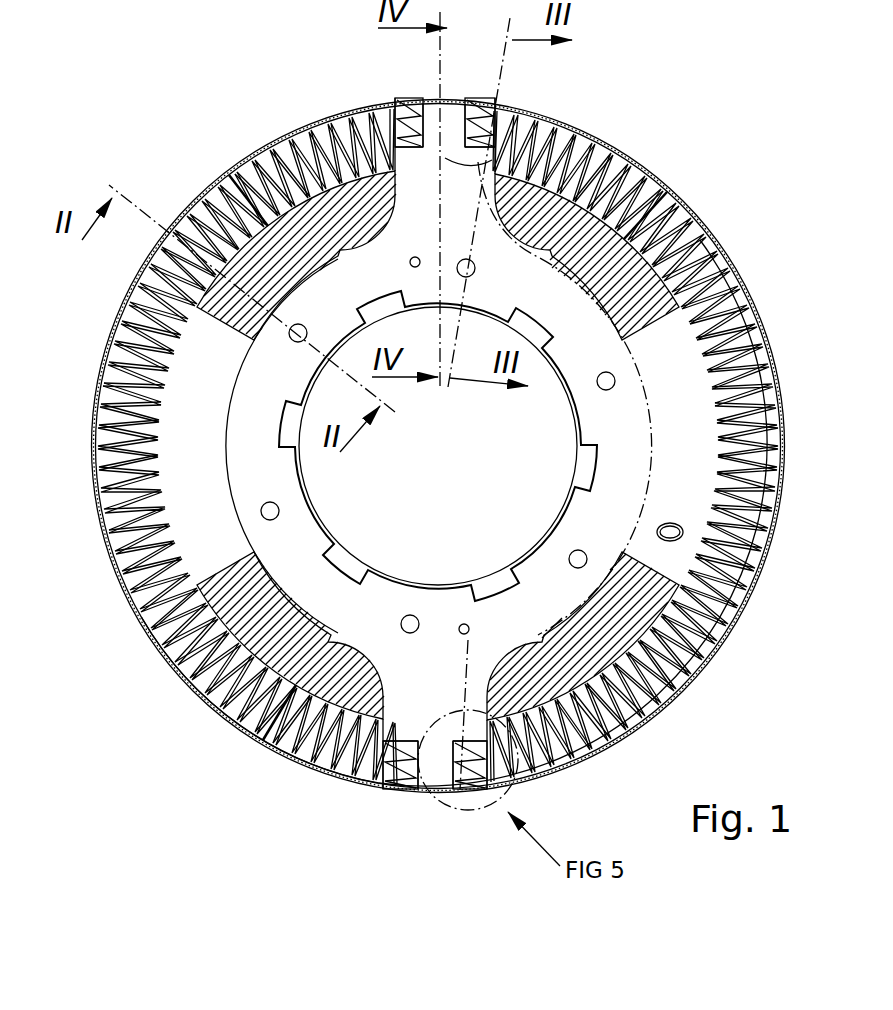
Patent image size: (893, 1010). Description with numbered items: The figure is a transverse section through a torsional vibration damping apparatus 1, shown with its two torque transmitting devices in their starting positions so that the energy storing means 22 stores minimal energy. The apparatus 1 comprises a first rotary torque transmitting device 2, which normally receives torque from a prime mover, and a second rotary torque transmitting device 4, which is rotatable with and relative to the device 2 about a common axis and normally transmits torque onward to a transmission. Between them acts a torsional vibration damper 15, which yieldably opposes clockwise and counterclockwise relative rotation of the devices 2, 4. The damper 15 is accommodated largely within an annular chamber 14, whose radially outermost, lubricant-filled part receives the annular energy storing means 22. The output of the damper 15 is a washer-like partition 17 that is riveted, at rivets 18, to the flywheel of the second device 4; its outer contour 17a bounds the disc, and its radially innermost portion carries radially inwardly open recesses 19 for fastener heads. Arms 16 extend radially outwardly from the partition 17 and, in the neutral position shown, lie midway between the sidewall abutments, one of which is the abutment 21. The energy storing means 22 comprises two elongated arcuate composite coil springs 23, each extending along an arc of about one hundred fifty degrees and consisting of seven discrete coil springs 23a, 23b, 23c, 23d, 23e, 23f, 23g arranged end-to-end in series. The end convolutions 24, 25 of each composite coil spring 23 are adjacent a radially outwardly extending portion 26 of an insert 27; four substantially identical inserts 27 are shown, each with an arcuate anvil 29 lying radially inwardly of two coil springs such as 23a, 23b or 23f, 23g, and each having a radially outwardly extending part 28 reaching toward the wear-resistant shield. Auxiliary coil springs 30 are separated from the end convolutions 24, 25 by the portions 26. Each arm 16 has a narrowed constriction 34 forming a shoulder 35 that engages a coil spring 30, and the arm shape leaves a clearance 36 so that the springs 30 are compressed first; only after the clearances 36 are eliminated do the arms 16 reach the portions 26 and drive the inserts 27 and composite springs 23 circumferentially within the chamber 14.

The apparatus 1 is at (676, 70).
The first rotary torque transmitting device 2 is at (745, 352).
The second rotary torque transmitting device 4 is at (250, 718).
The annular chamber 14 is at (700, 410).
The torsional vibration damper 15 is at (658, 158).
The arms 16 is at (503, 140).
The partition 17 is at (252, 483).
The flange outer contour 17a is at (262, 372).
The rivet 18 is at (289, 327).
The recesses 19 is at (541, 338).
The abutment 21 is at (393, 160).
The energy storing means 22 is at (634, 435).
The composite coil spring 23 is at (700, 248).
The coil spring 23a is at (298, 755).
The coil spring 23b is at (195, 664).
The coil spring 23c is at (125, 540).
The coil spring 23d is at (115, 402).
The coil spring 23e is at (135, 330).
The coil spring 23f is at (205, 238).
The coil spring 23g is at (318, 176).
The end convolution 24 is at (324, 418).
The end convolution 25 is at (508, 202).
The radially outwardly extending portion 26 is at (478, 790).
The insert 27 is at (648, 214).
The radially outwardly extending part 28 is at (370, 763).
The anvil 29 is at (518, 667).
The coil spring 30 is at (408, 112).
The constriction 34 is at (472, 98).
The shoulder 35 is at (445, 147).
The clearance 36 is at (446, 152).